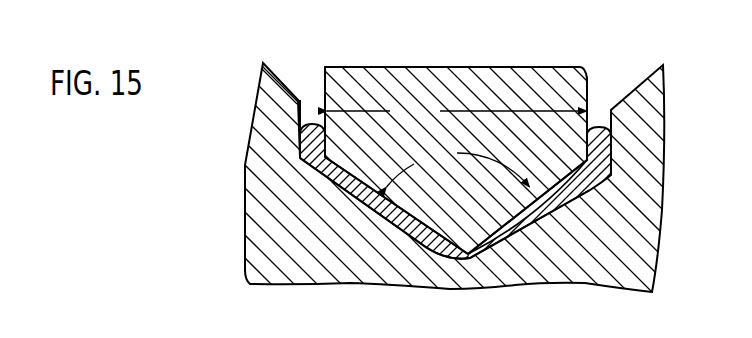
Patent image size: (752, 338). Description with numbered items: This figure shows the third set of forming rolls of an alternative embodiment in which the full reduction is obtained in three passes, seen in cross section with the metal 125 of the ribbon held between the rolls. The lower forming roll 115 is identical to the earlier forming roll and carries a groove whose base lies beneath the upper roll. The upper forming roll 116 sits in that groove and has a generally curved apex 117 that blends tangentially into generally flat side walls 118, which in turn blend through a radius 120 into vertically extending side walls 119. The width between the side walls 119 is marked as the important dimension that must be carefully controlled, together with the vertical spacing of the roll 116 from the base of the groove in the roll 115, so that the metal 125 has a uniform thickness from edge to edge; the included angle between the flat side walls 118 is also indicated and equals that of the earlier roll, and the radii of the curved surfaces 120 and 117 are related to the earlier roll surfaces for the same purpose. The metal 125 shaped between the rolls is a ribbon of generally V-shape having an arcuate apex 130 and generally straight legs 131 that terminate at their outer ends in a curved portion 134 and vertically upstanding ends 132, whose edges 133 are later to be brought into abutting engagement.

The lower forming roll 115 is at (266, 270).
The upper forming roll 116 is at (488, 84).
The curved apex 117 is at (460, 230).
The flat side walls 118 is at (388, 215).
The vertically extending side walls 119 is at (327, 84).
The radius 120 is at (302, 159).
The metal 125 is at (411, 233).
The arcuate apex 130 is at (470, 257).
The straight legs 131 is at (350, 193).
The vertically upstanding ends 132 is at (320, 143).
The edges 133 is at (313, 122).
The curved portion 134 is at (305, 162).